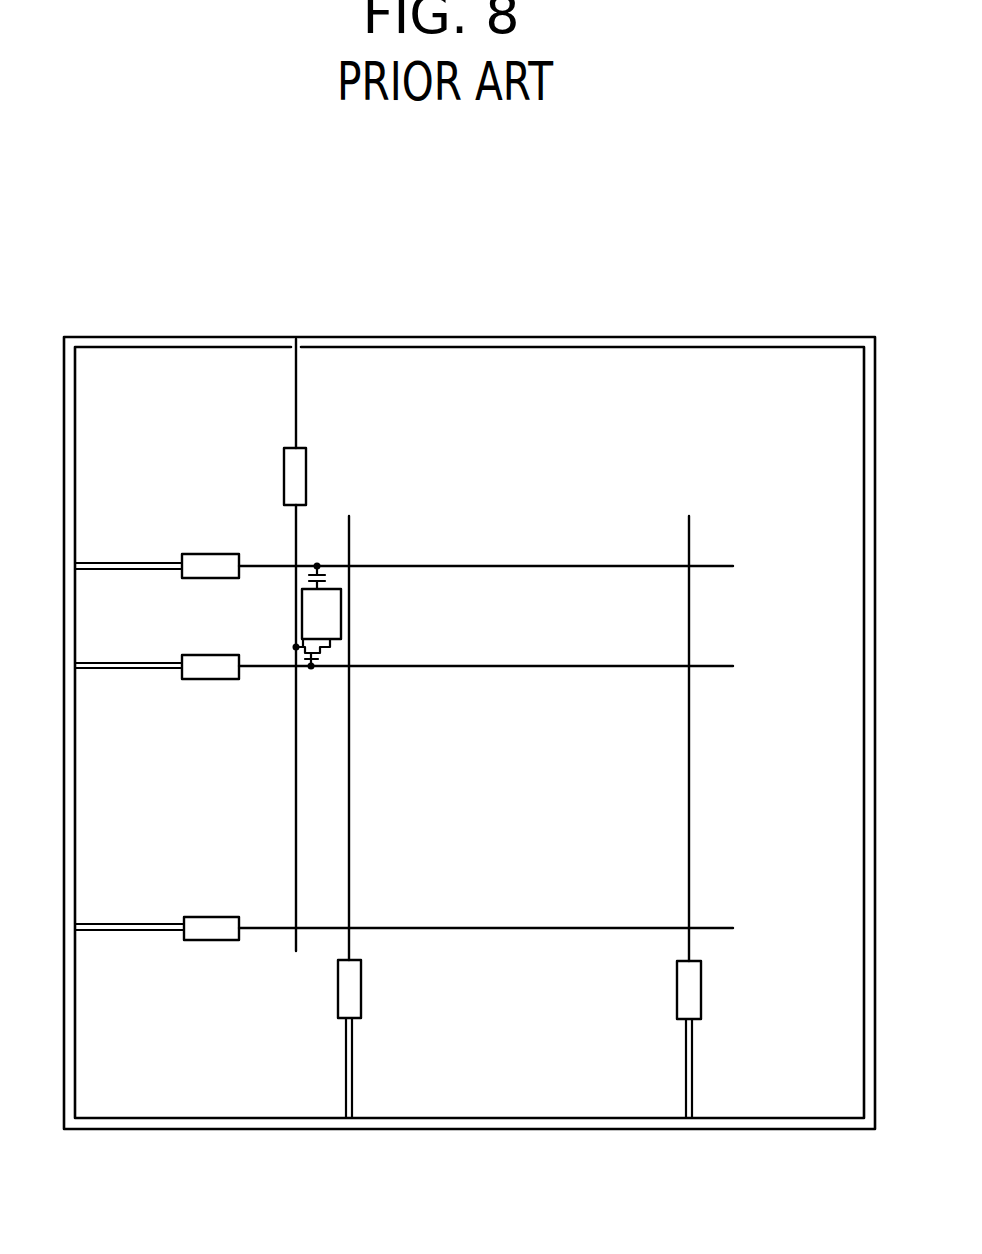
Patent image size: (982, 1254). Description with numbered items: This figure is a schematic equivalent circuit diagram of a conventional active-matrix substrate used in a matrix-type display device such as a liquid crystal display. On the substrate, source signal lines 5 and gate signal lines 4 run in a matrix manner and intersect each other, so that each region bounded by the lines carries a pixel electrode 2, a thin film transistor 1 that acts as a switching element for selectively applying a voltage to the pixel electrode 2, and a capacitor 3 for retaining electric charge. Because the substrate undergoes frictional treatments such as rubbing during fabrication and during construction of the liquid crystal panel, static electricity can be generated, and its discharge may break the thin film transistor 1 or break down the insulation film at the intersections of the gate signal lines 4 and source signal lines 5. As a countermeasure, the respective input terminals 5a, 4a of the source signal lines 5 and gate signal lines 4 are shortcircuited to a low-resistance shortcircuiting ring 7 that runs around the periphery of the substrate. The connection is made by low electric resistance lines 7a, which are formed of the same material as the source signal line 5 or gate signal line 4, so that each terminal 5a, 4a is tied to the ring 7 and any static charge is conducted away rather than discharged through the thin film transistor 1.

The thin film transistor 1 is at (605, 566).
The pixel electrode 2 is at (328, 610).
The capacitor 3 is at (316, 560).
The gate signal line 4 is at (335, 655).
The input terminal of gate signal line 4a is at (213, 927).
The source signal line 5 is at (296, 858).
The input terminal of source signal line 5a is at (292, 475).
The low-resistance shortcircuiting ring 7 is at (147, 343).
The low electric resistance line 7a is at (296, 390).